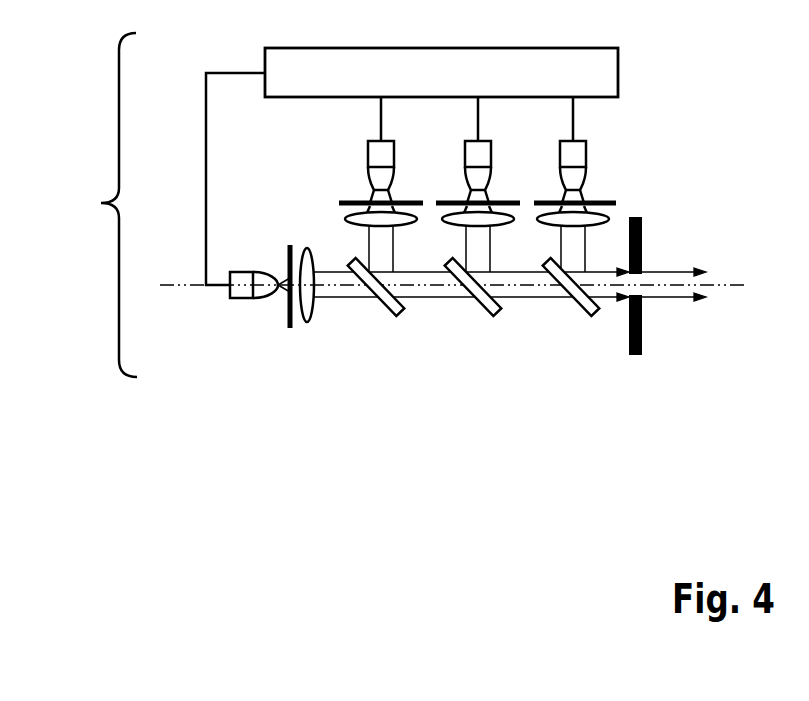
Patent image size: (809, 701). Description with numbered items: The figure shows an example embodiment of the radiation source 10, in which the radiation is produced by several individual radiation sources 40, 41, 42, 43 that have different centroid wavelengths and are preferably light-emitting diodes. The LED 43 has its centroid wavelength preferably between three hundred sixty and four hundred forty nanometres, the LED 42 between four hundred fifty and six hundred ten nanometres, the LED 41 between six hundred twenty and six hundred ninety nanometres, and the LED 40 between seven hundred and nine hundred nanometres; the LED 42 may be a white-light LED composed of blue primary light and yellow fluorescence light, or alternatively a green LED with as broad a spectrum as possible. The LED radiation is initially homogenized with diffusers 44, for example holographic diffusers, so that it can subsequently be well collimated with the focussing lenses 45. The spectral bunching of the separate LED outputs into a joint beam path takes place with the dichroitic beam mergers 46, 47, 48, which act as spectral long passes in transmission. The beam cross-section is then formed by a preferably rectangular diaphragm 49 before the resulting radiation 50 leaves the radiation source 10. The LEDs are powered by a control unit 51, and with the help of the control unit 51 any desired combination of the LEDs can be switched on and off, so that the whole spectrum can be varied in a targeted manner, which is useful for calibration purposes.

The radiation source 10 is at (94, 205).
The individual radiation source 40 is at (243, 298).
The individual radiation source 41 is at (368, 153).
The individual radiation source 42 is at (491, 150).
The individual radiation source 43 is at (586, 155).
The diffuser 44 is at (290, 328).
The focussing lens 45 is at (307, 322).
The dichroitic beam merger 46 is at (386, 318).
The dichroitic beam merger 47 is at (483, 318).
The dichroitic beam merger 48 is at (578, 318).
The diaphragm 49 is at (642, 340).
The resulting radiation 50 is at (667, 275).
The control unit 51 is at (618, 80).